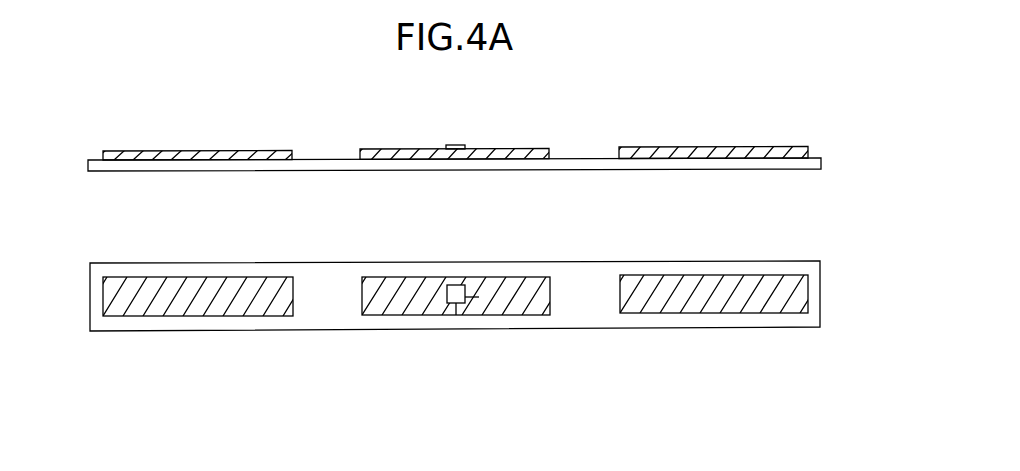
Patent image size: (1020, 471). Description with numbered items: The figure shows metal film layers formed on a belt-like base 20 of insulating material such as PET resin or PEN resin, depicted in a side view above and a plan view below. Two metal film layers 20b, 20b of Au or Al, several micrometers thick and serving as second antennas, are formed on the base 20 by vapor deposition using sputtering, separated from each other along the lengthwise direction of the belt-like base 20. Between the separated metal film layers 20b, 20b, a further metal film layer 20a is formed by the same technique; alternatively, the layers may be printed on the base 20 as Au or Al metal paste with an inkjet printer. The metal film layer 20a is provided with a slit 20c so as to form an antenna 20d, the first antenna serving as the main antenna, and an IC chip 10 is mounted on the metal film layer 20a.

The IC chip 10 is at (455, 145).
The belt-like base 20 is at (742, 169).
The metal film layer 20a is at (513, 152).
The metal film layer (second antenna) 20b is at (203, 155).
The slit 20c is at (472, 298).
The antenna (first antenna) 20d is at (492, 278).